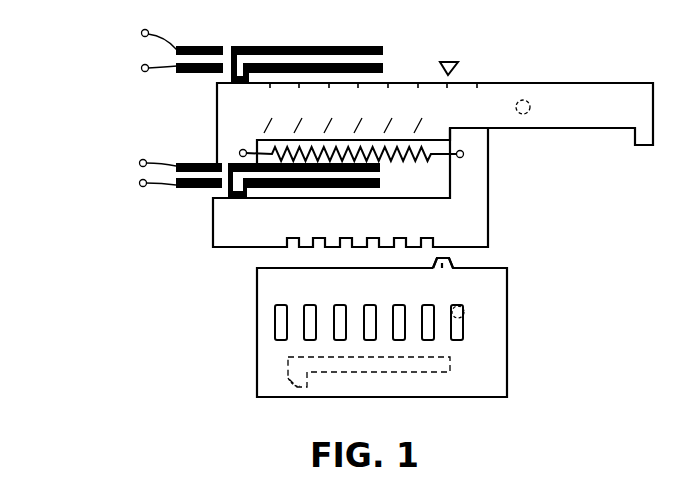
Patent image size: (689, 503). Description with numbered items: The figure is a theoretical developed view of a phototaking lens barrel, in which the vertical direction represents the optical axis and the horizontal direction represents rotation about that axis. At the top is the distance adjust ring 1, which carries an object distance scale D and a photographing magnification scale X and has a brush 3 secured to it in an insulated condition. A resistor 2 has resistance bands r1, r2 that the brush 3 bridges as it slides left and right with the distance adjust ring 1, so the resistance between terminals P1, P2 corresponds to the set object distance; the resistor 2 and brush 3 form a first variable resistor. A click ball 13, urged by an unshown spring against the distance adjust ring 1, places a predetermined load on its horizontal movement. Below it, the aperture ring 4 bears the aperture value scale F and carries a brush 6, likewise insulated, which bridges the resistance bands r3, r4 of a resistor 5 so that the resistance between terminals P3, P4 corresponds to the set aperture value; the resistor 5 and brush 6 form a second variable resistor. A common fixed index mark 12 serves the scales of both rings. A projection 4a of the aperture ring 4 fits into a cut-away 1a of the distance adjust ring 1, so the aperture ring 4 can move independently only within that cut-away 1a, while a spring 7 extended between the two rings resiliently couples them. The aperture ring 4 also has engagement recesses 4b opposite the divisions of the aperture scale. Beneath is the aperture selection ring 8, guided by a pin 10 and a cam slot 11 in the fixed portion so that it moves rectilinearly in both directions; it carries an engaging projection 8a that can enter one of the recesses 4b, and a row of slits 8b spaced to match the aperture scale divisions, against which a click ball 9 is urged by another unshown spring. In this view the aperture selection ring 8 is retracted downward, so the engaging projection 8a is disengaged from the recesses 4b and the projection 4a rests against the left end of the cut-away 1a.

The distance adjust ring 1 is at (217, 120).
The cut-away 1a is at (593, 130).
The resistor 2 is at (325, 46).
The brush 3 is at (241, 48).
The aperture ring 4 is at (214, 247).
The projection 4a is at (488, 190).
The engagement recesses 4b is at (445, 244).
The resistor 5 is at (176, 187).
The brush 6 is at (219, 192).
The spring 7 is at (400, 163).
The aperture selection ring 8 is at (257, 333).
The engaging projection 8a is at (442, 270).
The slits 8b is at (275, 312).
The click ball 9 is at (465, 315).
The pin 10 is at (288, 384).
The cam slot 11 is at (437, 372).
The index mark 12 is at (464, 56).
The click ball 13 is at (527, 101).
The resistance band r1 is at (195, 46).
The resistance band r2 is at (193, 74).
The resistance band r3 is at (188, 163).
The resistance band r4 is at (194, 184).
The terminal P1 is at (143, 36).
The terminal P2 is at (143, 71).
The terminal P3 is at (141, 166).
The terminal P4 is at (141, 190).